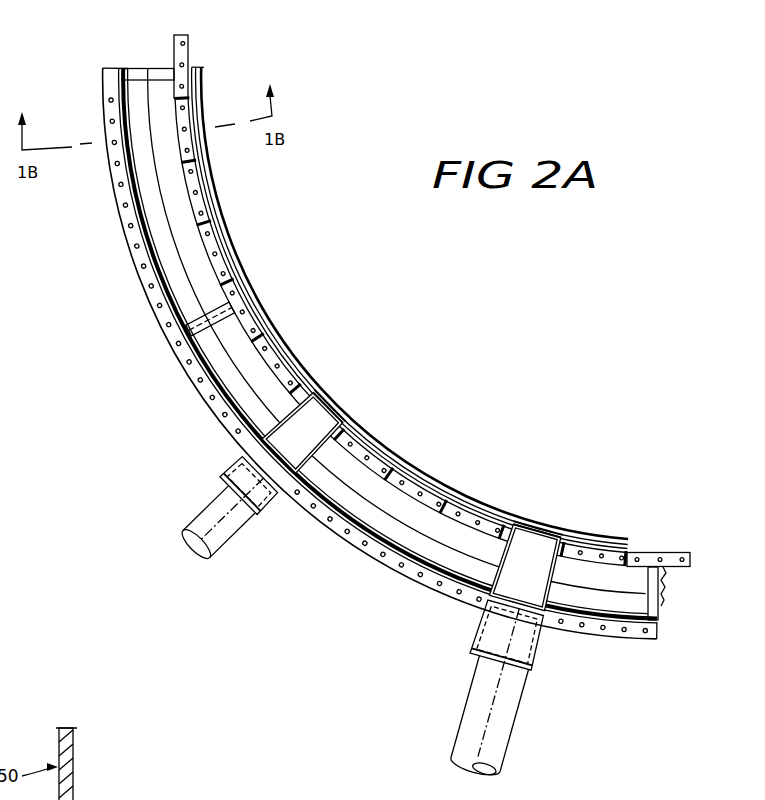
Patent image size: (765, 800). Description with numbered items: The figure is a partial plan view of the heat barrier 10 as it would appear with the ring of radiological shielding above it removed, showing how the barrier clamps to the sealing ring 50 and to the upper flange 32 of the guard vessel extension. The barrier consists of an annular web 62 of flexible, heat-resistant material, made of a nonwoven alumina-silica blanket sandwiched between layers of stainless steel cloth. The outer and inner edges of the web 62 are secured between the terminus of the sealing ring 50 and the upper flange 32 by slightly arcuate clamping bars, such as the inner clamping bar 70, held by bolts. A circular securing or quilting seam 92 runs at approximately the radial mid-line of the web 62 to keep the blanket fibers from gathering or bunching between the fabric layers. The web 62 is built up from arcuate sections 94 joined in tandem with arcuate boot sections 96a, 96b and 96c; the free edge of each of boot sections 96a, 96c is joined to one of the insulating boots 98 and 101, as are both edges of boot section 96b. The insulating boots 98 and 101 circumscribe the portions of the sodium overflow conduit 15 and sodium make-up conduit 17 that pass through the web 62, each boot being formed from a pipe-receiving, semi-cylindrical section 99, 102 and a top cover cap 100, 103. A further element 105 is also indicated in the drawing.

The heat barrier 10 is at (142, 58).
The sodium overflow conduit 15 is at (542, 545).
The sodium make-up conduit 17 is at (318, 418).
The upper flange of the guard vessel extension 32 is at (283, 345).
The sealing ring 50 is at (220, 410).
The annular web 62 is at (162, 237).
The inner clamping bar 70 is at (215, 262).
The securing or quilting seam 92 is at (167, 203).
The arcuate section 94 is at (163, 123).
The arcuate boot section 96a is at (242, 347).
The arcuate boot section 96b is at (393, 498).
The arcuate boot section 96c is at (630, 578).
The insulating boot 98 is at (545, 653).
The pipe-receiving, semi-cylindrical section 99 is at (520, 530).
The top cover cap 100 is at (498, 635).
The insulating boot 101 is at (233, 466).
The pipe-receiving, semi-cylindrical section 102 is at (313, 395).
The top cover cap 103 is at (267, 508).
The cross strip 105 is at (207, 348).